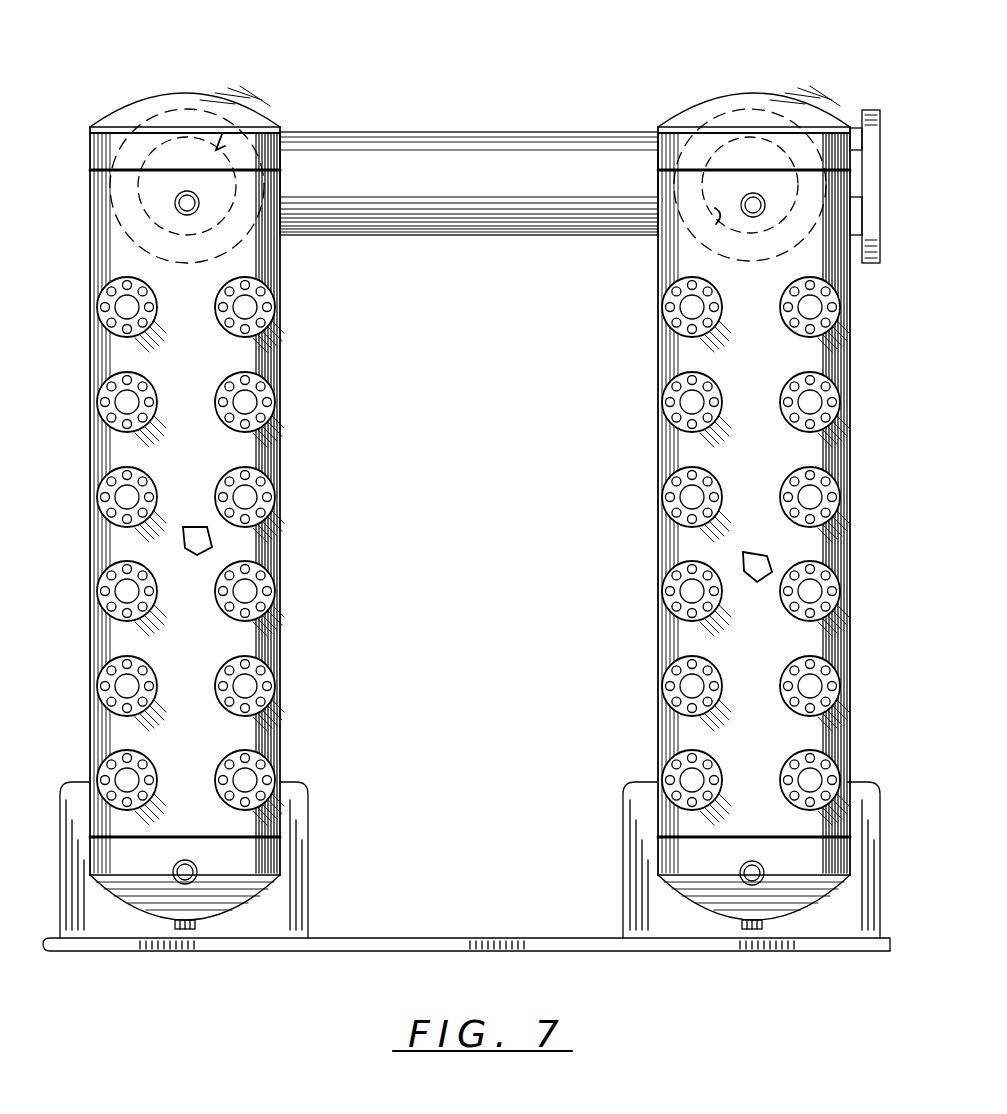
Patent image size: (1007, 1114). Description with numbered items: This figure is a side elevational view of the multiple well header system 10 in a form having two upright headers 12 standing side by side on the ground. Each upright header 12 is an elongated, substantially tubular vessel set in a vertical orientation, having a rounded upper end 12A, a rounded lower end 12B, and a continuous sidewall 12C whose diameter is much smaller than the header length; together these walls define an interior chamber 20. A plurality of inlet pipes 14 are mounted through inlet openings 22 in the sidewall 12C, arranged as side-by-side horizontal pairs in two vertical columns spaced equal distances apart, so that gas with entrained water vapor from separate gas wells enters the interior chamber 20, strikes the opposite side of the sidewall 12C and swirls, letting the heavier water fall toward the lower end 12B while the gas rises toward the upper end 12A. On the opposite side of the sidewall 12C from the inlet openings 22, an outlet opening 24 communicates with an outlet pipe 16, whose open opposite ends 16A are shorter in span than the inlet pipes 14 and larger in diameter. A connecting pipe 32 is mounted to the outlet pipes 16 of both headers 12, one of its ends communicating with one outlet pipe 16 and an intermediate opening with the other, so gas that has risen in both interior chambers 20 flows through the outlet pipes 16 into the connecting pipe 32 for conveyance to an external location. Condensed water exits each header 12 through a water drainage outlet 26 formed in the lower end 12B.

The multiple well header system 10 is at (198, 66).
The upright header 12 is at (461, 523).
The upper end 12A is at (131, 100).
The lower end 12B is at (226, 921).
The sidewall 12C is at (283, 586).
The inlet pipe 14 is at (100, 312).
The outlet pipe 16 is at (182, 118).
The open opposite ends 16A is at (260, 240).
The interior chamber 20 is at (212, 541).
The inlet openings 22 is at (250, 398).
The outlet opening 24 is at (232, 125).
The water drainage outlet 26 is at (183, 928).
The connecting pipe 32 is at (455, 132).